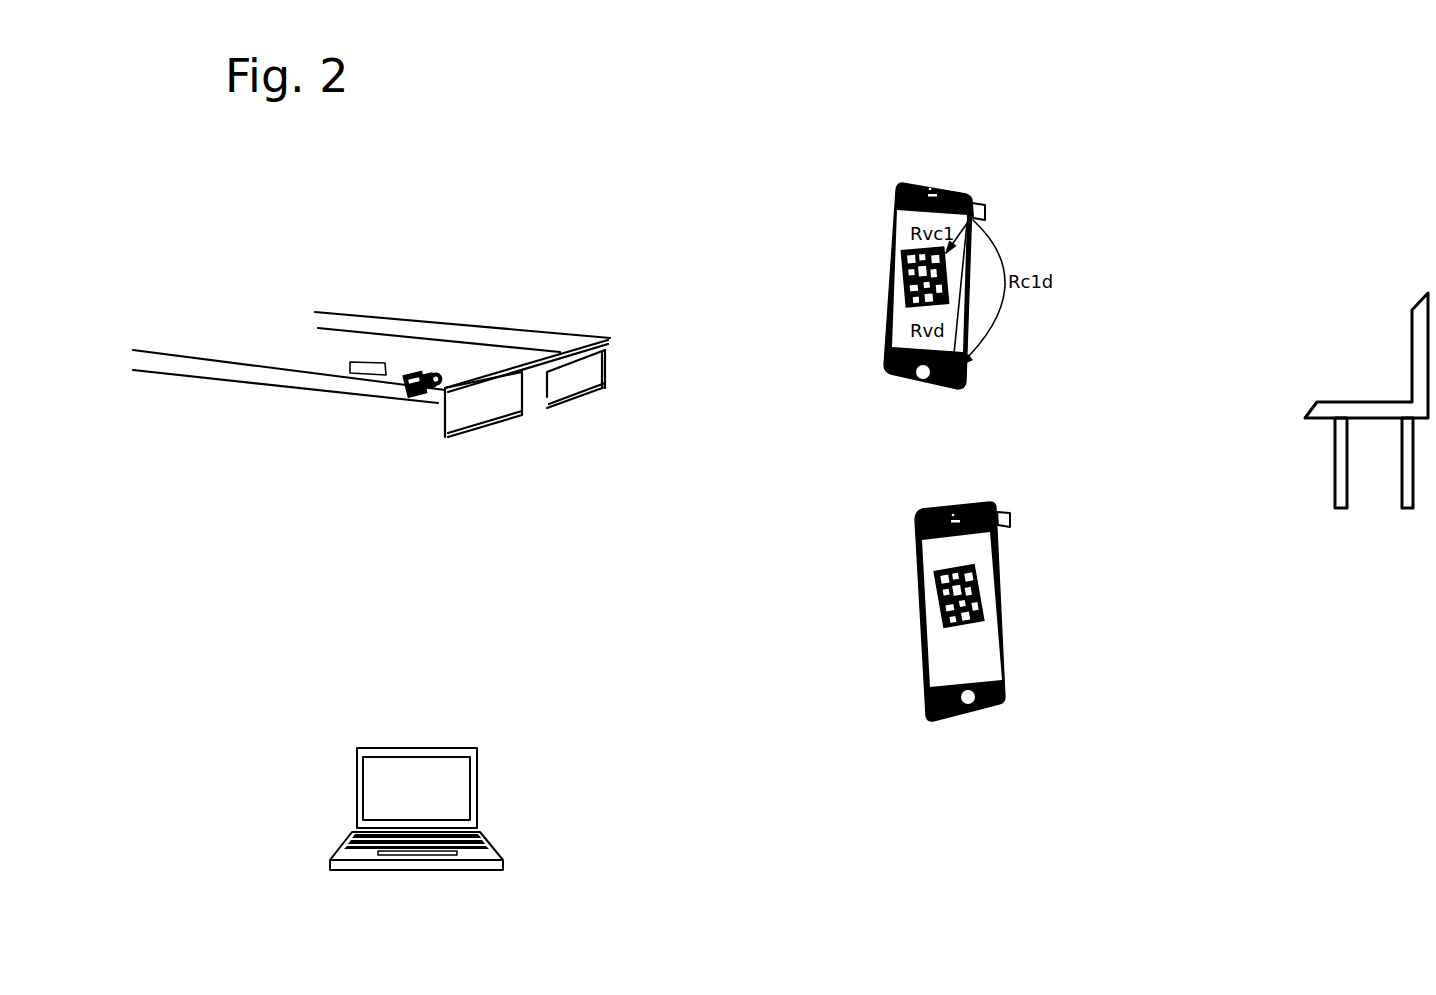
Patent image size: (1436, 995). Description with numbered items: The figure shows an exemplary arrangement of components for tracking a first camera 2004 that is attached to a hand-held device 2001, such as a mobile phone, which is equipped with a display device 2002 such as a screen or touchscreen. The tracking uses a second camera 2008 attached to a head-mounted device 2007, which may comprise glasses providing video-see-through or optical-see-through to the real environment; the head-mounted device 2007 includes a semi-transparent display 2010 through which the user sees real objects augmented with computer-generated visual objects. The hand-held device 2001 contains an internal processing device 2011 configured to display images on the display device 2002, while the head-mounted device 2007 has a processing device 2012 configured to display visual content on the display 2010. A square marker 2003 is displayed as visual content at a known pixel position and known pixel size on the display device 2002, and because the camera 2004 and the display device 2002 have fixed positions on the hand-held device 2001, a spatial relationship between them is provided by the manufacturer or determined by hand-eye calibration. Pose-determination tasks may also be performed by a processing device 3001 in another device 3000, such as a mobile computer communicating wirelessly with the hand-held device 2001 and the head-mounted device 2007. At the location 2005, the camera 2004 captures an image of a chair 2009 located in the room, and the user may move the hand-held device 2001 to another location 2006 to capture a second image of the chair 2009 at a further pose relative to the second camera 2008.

The hand-held device 2001 is at (882, 176).
The display device 2002 is at (896, 244).
The square marker 2003 is at (890, 285).
The first camera 2004 is at (988, 182).
The location of pose P1 2005 is at (960, 151).
The another location 2006 is at (1041, 743).
The head-mounted device 2007 is at (294, 437).
The second camera 2008 is at (425, 413).
The chair 2009 is at (1344, 525).
The semi-transparent display 2010 is at (584, 422).
The processing device 2011 is at (1008, 690).
The processing device 2012 is at (328, 354).
The another device 3000 is at (395, 809).
The processing device 3001 is at (500, 843).